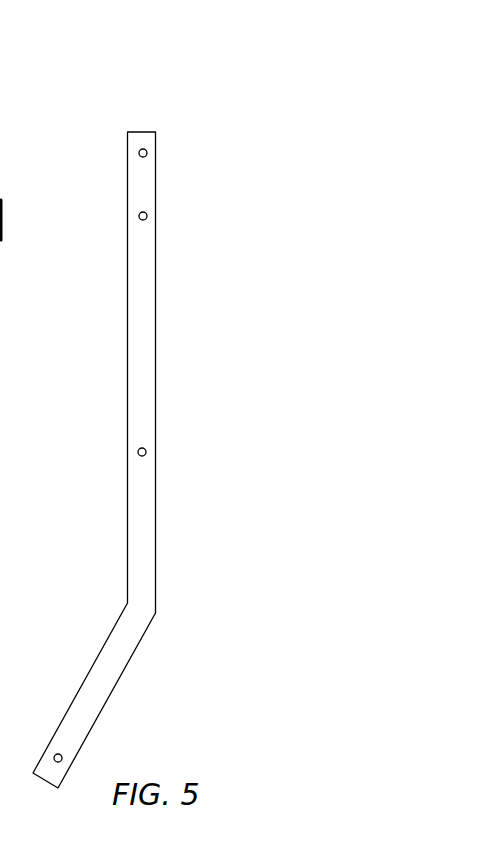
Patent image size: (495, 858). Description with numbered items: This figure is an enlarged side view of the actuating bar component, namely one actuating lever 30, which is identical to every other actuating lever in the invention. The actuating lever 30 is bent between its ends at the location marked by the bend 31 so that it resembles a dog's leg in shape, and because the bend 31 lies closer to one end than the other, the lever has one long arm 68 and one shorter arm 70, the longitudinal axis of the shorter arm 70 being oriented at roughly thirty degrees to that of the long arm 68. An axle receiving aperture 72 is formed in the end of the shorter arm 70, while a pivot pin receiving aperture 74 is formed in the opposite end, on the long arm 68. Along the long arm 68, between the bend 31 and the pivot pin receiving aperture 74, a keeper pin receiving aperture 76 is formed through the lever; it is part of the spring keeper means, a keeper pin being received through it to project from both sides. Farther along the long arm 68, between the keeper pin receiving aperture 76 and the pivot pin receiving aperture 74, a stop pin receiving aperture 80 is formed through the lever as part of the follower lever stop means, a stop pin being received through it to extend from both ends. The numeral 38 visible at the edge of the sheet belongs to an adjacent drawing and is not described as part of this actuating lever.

The actuating lever 30 is at (122, 459).
The bend 31 is at (162, 610).
The adjacent figure element 38 is at (12, 240).
The long arm 68 is at (150, 325).
The shorter arm 70 is at (112, 676).
The axle receiving aperture 72 is at (63, 756).
The pivot pin receiving aperture 74 is at (149, 152).
The keeper pin receiving aperture 76 is at (147, 444).
The stop pin receiving aperture 80 is at (150, 212).